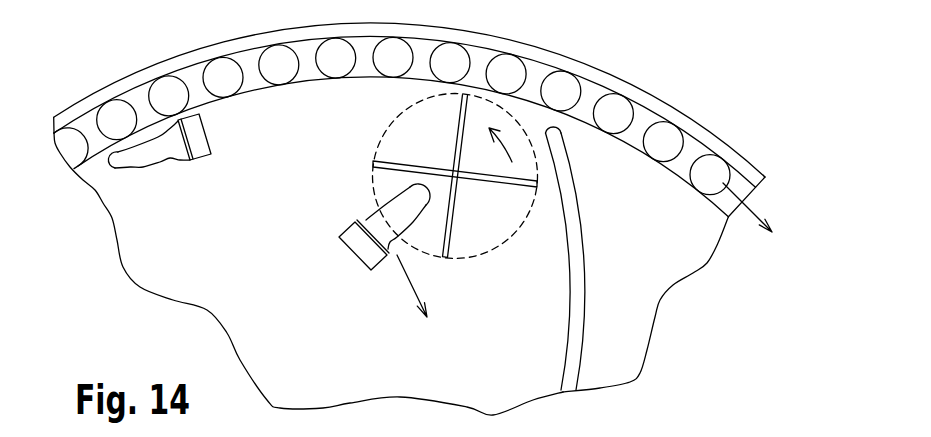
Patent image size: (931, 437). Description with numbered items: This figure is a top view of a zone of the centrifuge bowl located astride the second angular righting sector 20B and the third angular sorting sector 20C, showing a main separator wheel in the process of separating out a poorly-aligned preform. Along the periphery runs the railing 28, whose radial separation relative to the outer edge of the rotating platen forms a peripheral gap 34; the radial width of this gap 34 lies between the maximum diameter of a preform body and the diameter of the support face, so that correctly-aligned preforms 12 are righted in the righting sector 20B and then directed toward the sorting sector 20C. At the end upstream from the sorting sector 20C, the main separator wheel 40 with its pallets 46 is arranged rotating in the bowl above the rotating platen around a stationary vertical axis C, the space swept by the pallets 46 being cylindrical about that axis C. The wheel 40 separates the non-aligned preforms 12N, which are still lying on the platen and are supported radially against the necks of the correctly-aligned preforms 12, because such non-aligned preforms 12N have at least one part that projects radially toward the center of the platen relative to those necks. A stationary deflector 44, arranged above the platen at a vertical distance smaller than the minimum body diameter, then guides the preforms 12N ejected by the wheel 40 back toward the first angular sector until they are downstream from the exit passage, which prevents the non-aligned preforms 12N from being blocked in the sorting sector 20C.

The preform 12 is at (714, 174).
The non-aligned preform 12N is at (145, 157).
The railing 28 is at (660, 112).
The peripheral gap 34 is at (588, 106).
The main separator wheel 40 is at (477, 210).
The deflector 44 is at (577, 337).
The pallets 46 is at (445, 240).
The second angular righting sector 20B is at (308, 274).
The third angular sorting sector 20C is at (645, 304).
The stationary axis C is at (455, 172).